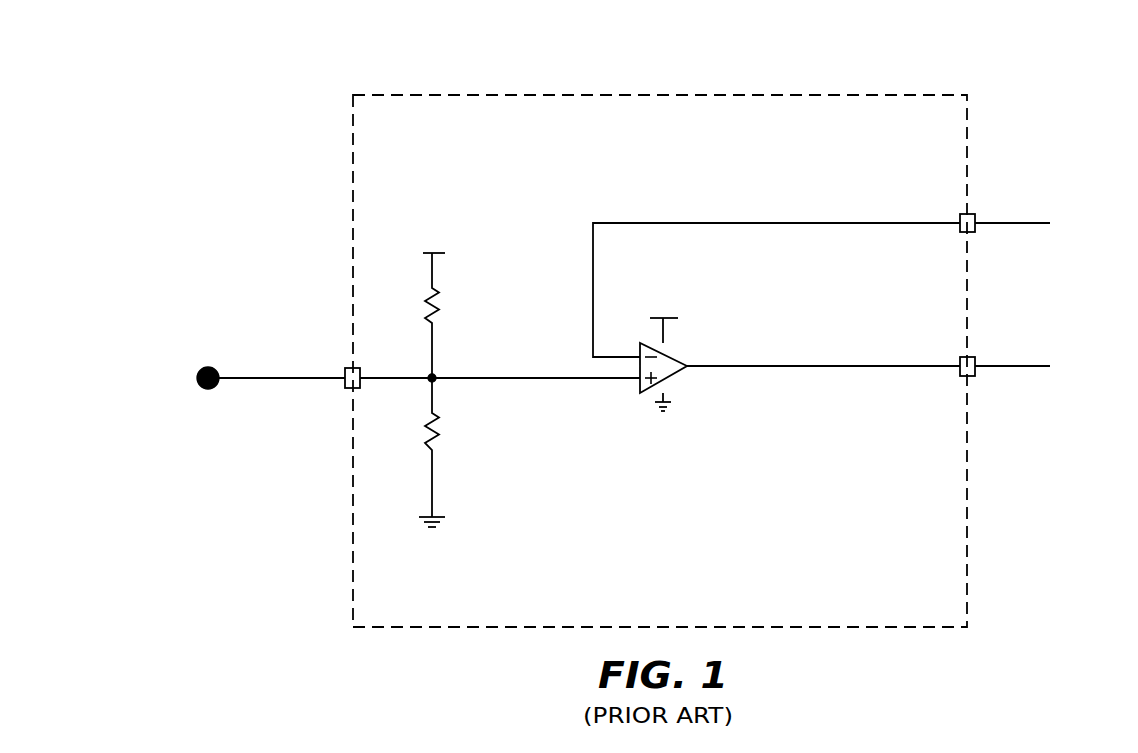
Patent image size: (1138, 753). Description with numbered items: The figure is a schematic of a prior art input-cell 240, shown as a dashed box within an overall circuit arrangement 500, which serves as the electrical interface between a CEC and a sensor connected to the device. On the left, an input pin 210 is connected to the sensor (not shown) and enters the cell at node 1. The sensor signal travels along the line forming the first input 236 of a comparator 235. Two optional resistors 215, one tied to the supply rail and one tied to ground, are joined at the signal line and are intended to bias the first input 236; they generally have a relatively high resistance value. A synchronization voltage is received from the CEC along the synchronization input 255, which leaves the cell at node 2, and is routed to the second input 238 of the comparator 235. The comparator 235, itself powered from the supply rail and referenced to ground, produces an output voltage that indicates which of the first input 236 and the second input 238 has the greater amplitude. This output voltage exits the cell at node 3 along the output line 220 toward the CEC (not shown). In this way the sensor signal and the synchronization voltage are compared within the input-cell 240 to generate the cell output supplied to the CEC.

The input circuit 500 is at (1000, 78).
The input-cell 240 is at (353, 205).
The input pin 210 is at (257, 382).
The input node 1 is at (365, 366).
The first input 236 is at (577, 380).
The optional resistors 215 is at (442, 312).
The second input 238 is at (593, 265).
The comparator 235 is at (678, 377).
The Vsync output node 2 is at (958, 214).
The synchronization input 255 is at (1023, 222).
The Vcell output node 3 is at (958, 359).
The Vcell output line 220 is at (1025, 365).